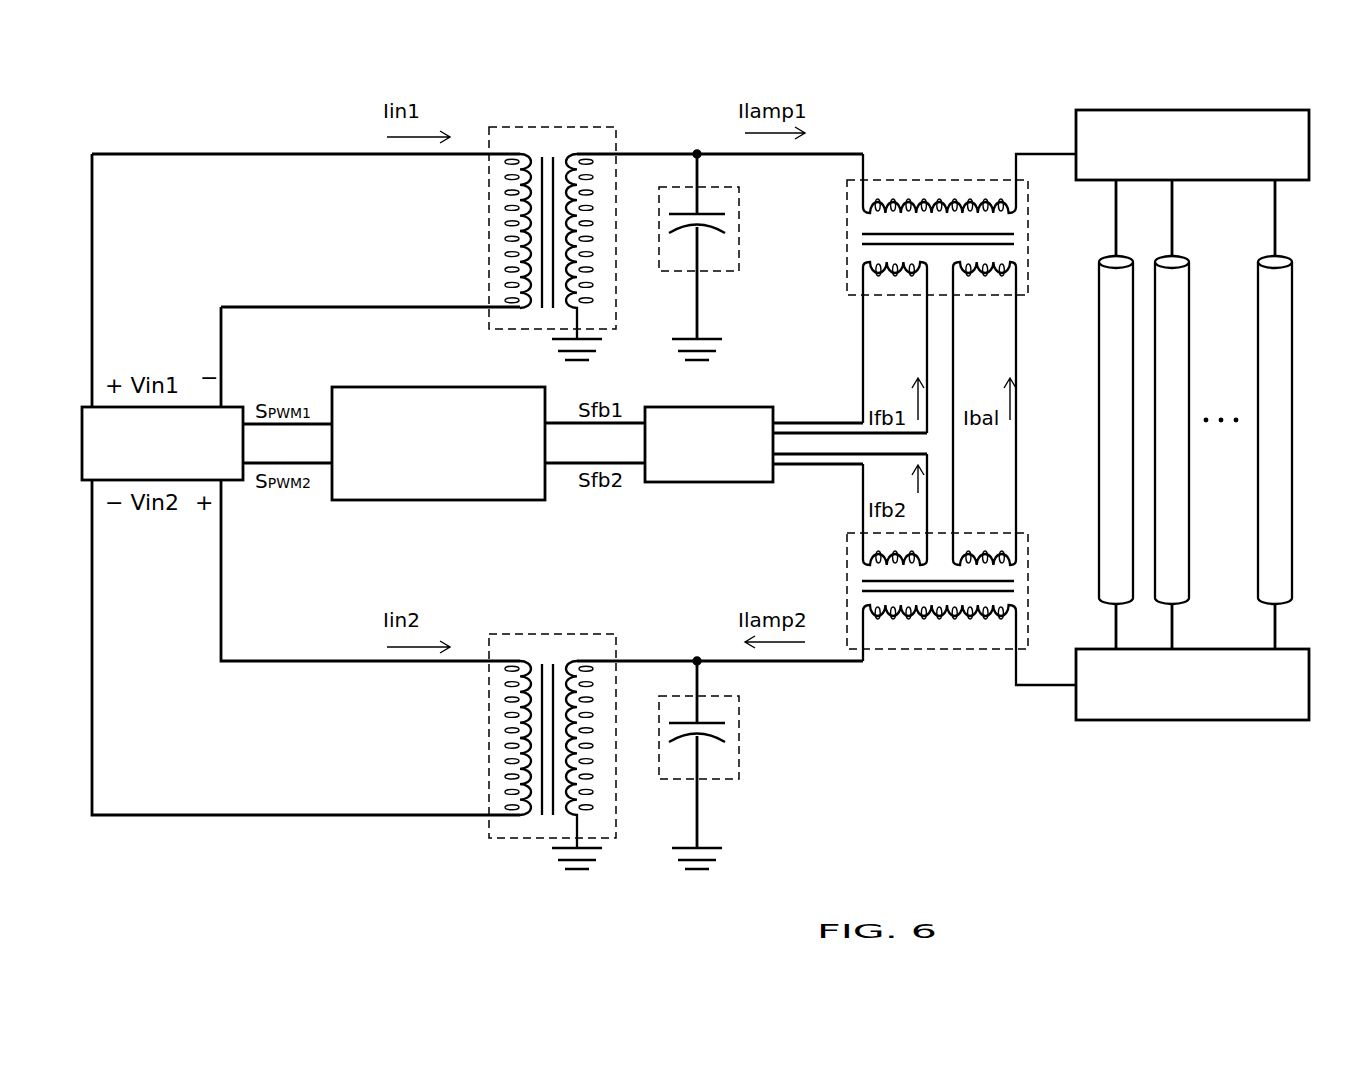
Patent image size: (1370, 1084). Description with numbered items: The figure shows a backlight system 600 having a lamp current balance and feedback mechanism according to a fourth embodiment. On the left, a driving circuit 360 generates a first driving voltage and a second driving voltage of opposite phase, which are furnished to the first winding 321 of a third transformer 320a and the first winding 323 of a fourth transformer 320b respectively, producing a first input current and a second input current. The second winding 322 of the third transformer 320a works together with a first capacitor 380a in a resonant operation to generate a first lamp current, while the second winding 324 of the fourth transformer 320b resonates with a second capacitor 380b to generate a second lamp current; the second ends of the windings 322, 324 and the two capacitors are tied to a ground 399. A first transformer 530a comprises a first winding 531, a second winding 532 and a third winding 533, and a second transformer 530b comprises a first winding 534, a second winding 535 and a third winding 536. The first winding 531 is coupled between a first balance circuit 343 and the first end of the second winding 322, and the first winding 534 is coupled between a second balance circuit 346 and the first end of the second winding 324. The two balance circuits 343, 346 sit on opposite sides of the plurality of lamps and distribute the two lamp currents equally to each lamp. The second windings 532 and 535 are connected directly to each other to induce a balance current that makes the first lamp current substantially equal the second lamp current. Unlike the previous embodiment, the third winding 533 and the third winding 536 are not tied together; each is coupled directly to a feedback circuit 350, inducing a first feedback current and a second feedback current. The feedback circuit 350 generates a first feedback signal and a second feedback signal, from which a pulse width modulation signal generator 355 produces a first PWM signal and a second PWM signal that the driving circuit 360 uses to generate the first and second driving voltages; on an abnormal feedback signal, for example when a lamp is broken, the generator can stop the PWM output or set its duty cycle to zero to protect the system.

The backlight system 600 is at (1067, 803).
The driving circuit 360 is at (233, 407).
The pulse width modulation signal generator 355 is at (505, 500).
The feedback circuit 350 is at (733, 482).
The first balance circuit 343 is at (1280, 110).
The second balance circuit 346 is at (1280, 720).
The third transformer 320a is at (549, 216).
The fourth transformer 320b is at (549, 725).
The first winding 321 is at (505, 243).
The second winding 322 is at (587, 270).
The first winding 323 is at (505, 707).
The second winding 324 is at (587, 772).
The first capacitor 380a is at (739, 253).
The second capacitor 380b is at (739, 762).
The ground 399 is at (737, 860).
The first transformer 530a is at (961, 326).
The second transformer 530b is at (927, 593).
The first winding 531 is at (985, 195).
The second winding 532 is at (980, 288).
The third winding 533 is at (892, 288).
The first winding 534 is at (985, 627).
The second winding 535 is at (982, 540).
The third winding 536 is at (860, 570).